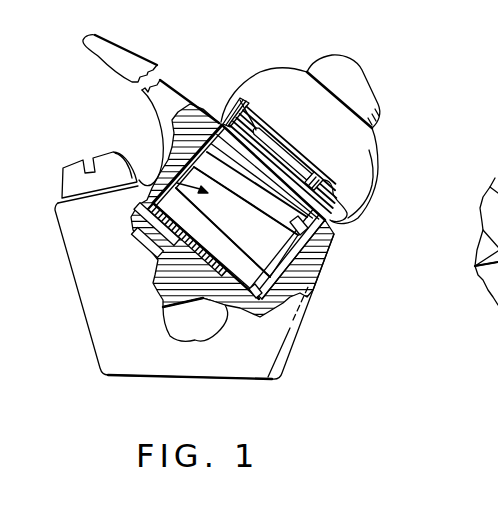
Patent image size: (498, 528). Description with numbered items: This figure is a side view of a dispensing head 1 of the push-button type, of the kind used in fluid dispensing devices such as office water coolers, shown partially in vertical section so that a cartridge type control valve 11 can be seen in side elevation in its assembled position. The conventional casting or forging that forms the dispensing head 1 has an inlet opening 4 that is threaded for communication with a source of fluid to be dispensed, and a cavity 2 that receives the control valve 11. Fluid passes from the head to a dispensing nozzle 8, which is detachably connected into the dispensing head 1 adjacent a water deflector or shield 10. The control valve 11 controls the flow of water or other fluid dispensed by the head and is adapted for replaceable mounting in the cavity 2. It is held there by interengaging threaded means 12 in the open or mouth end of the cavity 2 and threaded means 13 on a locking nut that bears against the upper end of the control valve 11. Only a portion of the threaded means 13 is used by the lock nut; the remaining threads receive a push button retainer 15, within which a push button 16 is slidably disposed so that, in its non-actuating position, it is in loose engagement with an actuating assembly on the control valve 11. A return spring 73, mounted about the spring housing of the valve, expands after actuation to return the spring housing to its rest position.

The dispensing head 1 is at (207, 93).
The cavity 2 is at (281, 262).
The inlet opening 4 is at (205, 332).
The dispensing nozzle 8 is at (62, 198).
The water deflector or shield 10 is at (110, 47).
The cartridge type control valve 11 is at (204, 158).
The threaded means 12 is at (228, 151).
The threaded means 13 is at (251, 129).
The push button retainer 15 is at (374, 181).
The push button 16 is at (367, 110).
The return spring 73 is at (299, 170).